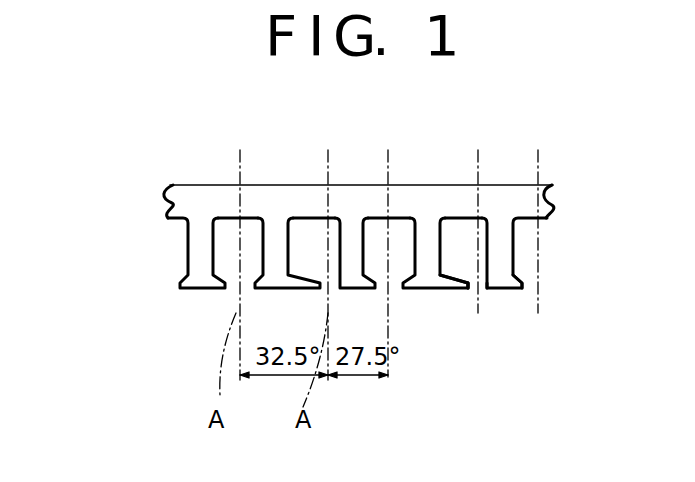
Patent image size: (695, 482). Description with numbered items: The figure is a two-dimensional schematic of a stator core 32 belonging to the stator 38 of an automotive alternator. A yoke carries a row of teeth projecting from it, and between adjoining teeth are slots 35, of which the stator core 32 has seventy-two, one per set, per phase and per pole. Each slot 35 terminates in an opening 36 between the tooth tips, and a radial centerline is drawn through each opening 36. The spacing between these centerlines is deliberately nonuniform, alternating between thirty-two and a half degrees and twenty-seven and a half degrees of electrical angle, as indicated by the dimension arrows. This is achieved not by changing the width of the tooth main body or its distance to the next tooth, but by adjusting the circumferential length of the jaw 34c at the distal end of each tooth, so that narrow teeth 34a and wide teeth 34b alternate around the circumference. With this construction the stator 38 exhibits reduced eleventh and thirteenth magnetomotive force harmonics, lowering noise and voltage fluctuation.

The stator core 32 is at (163, 202).
The stator 38 is at (150, 249).
The narrow tooth 34a is at (190, 248).
The wide tooth 34b is at (452, 289).
The jaw 34c is at (467, 288).
The slot 35 is at (237, 277).
The opening 36 is at (483, 289).